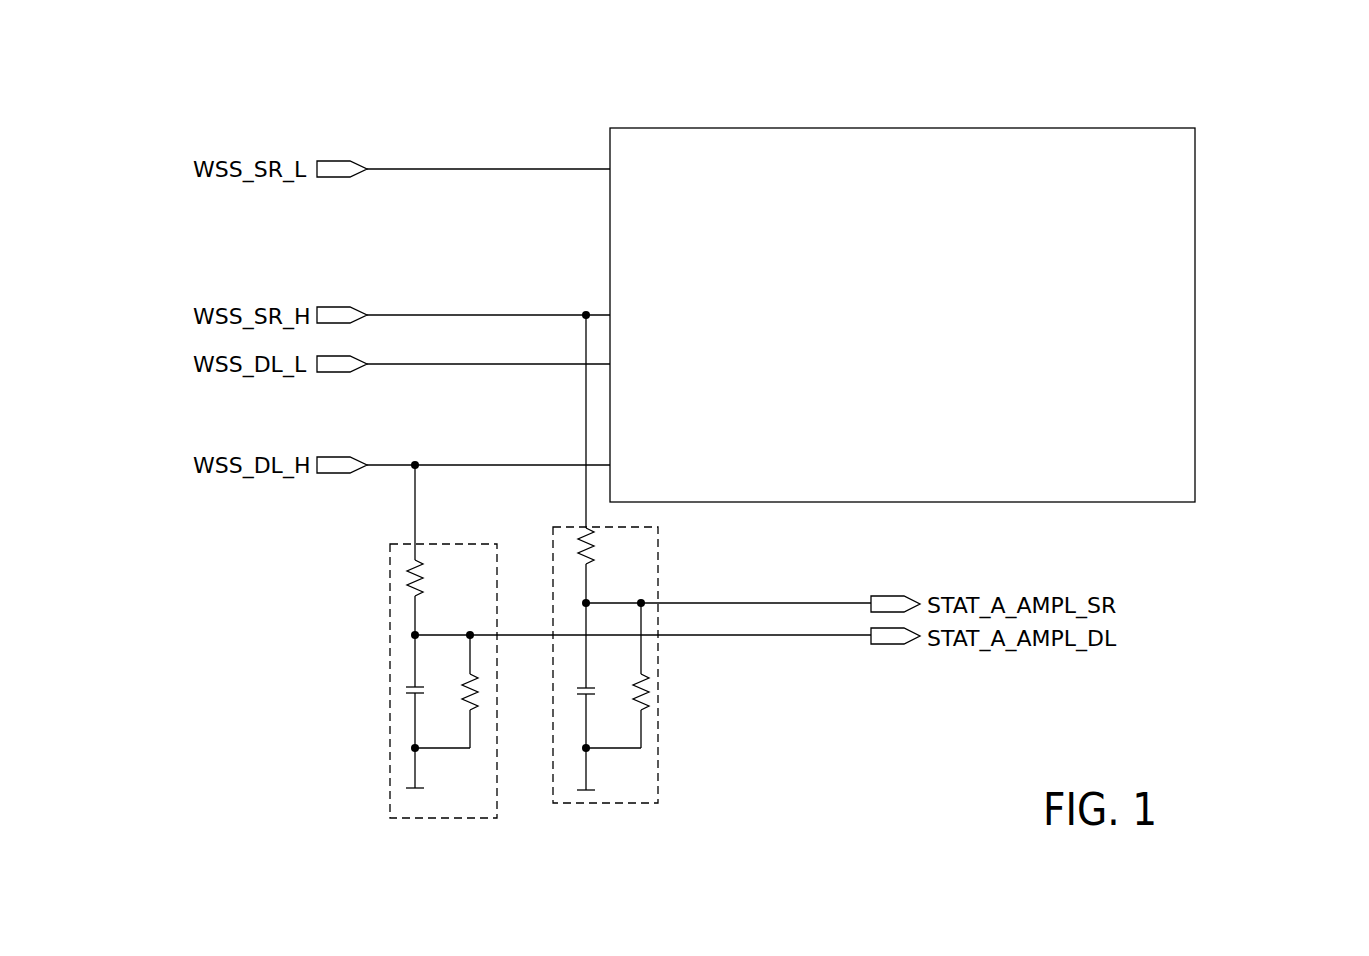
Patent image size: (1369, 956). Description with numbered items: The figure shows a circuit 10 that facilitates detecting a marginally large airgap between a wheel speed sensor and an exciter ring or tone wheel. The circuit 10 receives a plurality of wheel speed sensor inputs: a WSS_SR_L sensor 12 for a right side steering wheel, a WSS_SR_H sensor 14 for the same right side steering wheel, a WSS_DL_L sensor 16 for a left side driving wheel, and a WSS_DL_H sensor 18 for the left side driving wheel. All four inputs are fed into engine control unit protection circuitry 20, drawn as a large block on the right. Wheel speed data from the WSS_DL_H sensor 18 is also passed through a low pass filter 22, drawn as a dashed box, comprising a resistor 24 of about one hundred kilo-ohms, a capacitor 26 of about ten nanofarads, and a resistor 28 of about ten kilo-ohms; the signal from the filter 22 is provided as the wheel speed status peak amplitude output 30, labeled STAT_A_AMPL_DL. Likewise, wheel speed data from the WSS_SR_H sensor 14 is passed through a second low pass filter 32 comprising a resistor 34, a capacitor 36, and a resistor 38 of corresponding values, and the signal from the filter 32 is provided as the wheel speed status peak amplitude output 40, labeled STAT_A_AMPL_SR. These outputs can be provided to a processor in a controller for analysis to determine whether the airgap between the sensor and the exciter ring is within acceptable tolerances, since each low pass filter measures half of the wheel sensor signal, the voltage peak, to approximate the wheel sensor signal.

The circuit 10 is at (406, 58).
The WSS_SR_L sensor 12 is at (331, 160).
The WSS_SR_H sensor 14 is at (331, 307).
The WSS_DL_L sensor 16 is at (331, 373).
The WSS_DL_H sensor 18 is at (331, 457).
The ECU protection circuitry 20 is at (789, 128).
The low pass filter 22 is at (432, 544).
The resistor 24 is at (412, 575).
The capacitor 26 is at (407, 686).
The resistor 28 is at (477, 703).
The wheel speed status peak amplitude output 30 is at (903, 645).
The low pass filter 32 is at (660, 552).
The resistor 34 is at (580, 547).
The capacitor 36 is at (578, 688).
The resistor 38 is at (647, 687).
The wheel speed status peak amplitude output 40 is at (903, 597).